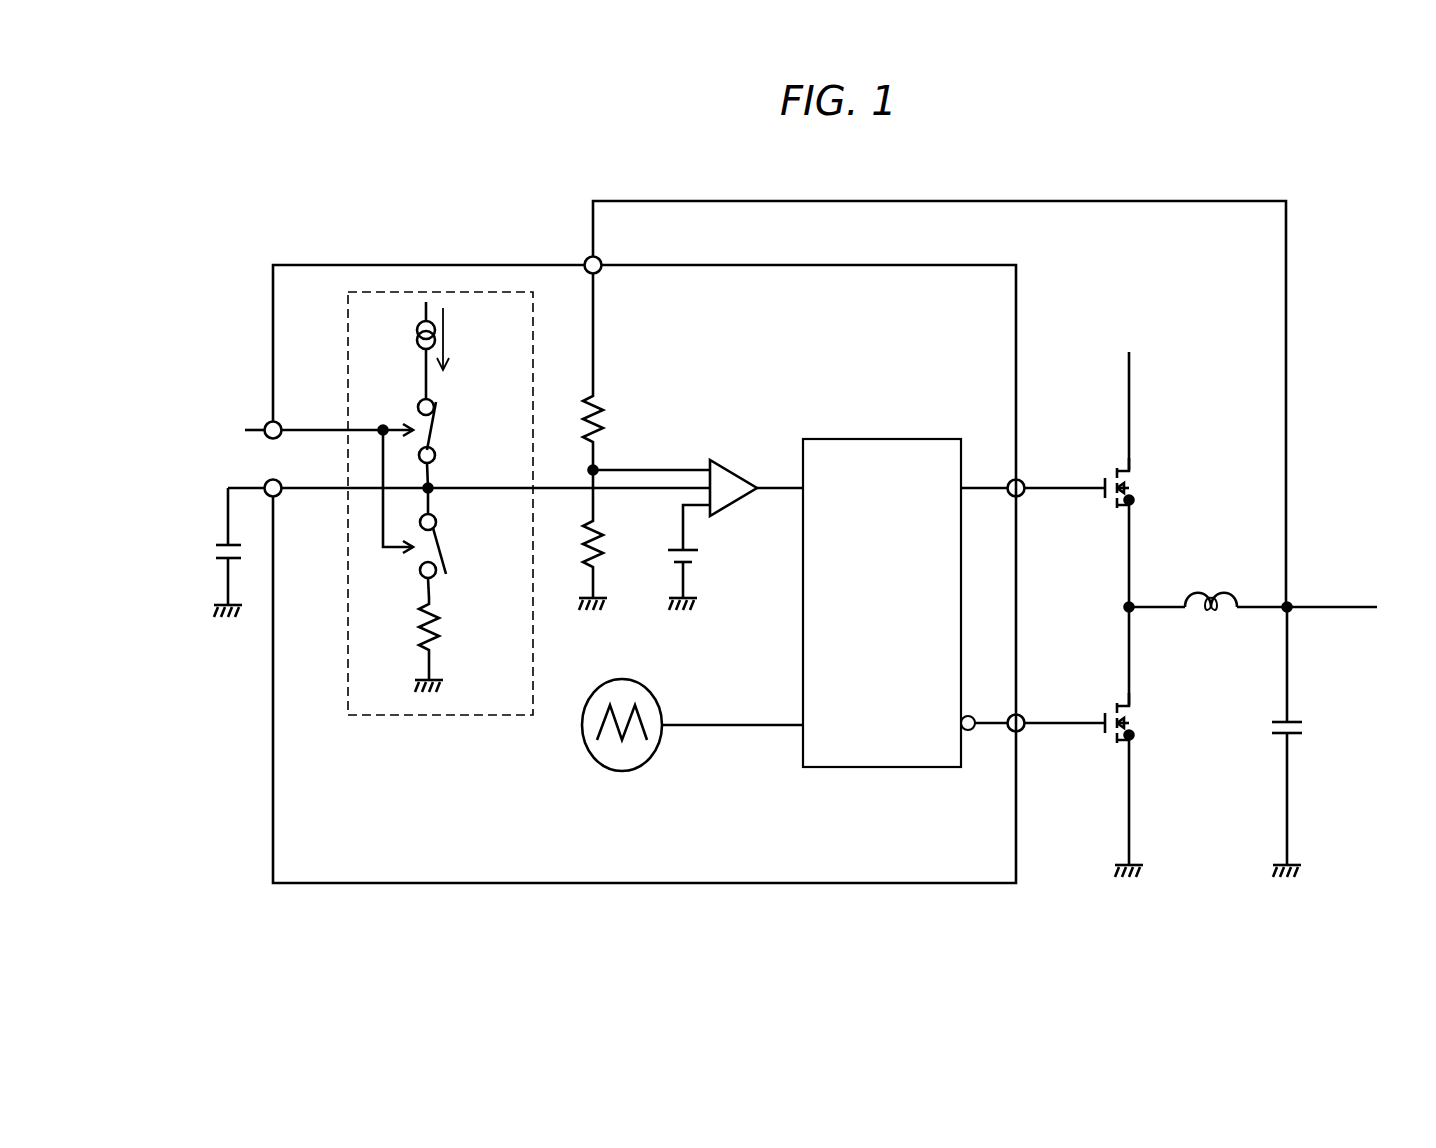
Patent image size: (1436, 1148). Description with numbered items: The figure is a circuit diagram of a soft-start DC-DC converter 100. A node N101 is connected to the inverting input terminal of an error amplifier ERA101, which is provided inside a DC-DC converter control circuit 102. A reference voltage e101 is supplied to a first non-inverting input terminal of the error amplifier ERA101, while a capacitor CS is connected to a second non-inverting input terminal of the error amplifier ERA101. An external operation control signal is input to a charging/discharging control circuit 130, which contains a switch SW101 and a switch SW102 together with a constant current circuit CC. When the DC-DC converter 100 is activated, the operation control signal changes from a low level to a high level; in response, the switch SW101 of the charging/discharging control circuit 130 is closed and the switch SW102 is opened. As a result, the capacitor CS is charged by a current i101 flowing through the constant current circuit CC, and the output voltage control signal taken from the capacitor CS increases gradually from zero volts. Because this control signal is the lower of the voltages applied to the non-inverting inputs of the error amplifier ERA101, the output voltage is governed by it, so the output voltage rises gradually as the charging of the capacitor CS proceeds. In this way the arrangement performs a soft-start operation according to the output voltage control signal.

The soft-start DC-DC converter 100 is at (1037, 177).
The DC-DC converter control circuit 102 is at (366, 265).
The charging/discharging control circuit 130 is at (533, 366).
The constant current circuit CC is at (409, 350).
The current i101 is at (468, 339).
The switch SW101 is at (469, 443).
The switch SW102 is at (468, 590).
The capacitor CS is at (222, 553).
The node N101 is at (598, 468).
The error amplifier ERA101 is at (737, 478).
The reference voltage e101 is at (710, 557).